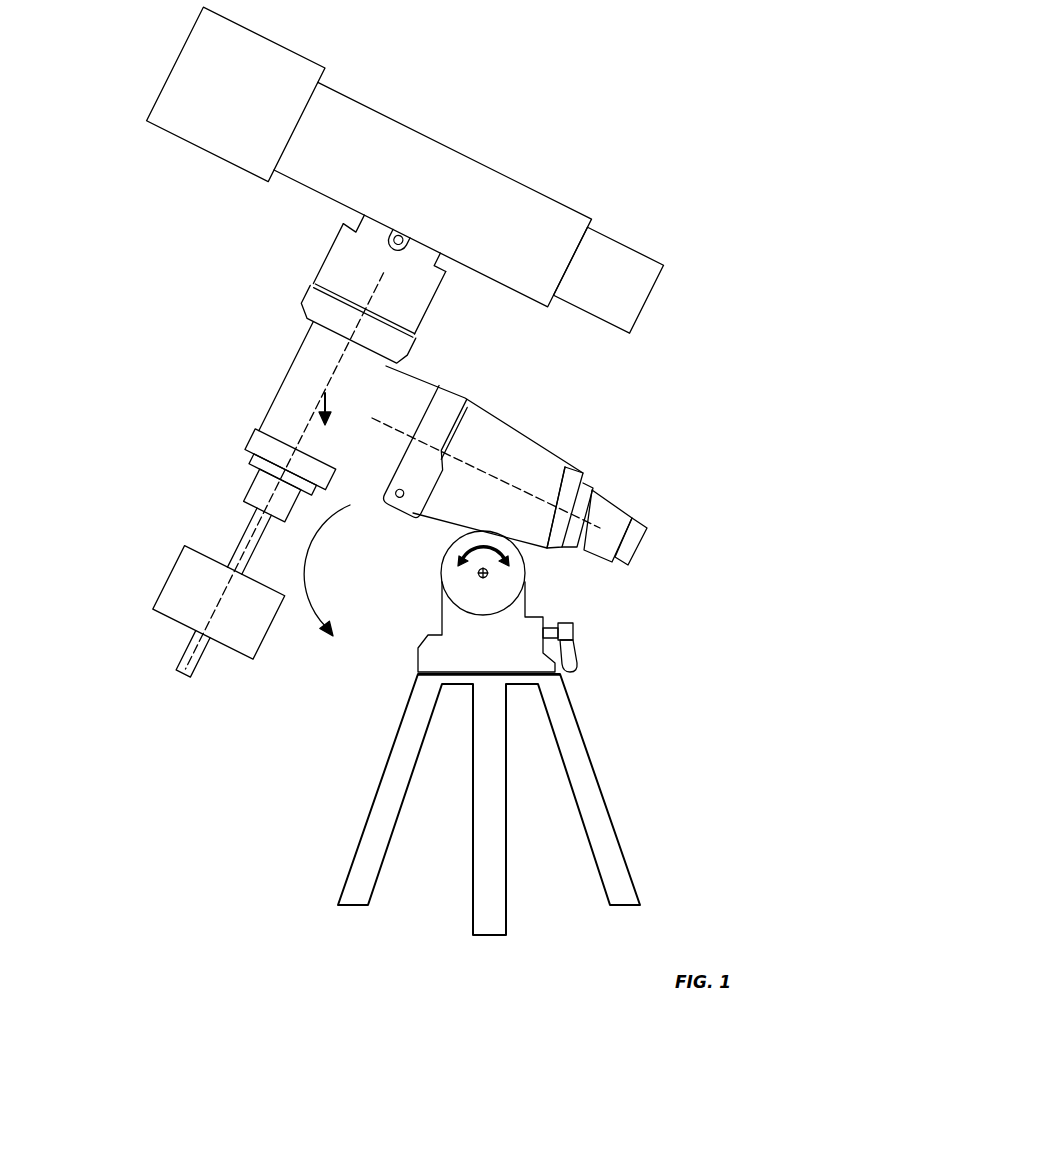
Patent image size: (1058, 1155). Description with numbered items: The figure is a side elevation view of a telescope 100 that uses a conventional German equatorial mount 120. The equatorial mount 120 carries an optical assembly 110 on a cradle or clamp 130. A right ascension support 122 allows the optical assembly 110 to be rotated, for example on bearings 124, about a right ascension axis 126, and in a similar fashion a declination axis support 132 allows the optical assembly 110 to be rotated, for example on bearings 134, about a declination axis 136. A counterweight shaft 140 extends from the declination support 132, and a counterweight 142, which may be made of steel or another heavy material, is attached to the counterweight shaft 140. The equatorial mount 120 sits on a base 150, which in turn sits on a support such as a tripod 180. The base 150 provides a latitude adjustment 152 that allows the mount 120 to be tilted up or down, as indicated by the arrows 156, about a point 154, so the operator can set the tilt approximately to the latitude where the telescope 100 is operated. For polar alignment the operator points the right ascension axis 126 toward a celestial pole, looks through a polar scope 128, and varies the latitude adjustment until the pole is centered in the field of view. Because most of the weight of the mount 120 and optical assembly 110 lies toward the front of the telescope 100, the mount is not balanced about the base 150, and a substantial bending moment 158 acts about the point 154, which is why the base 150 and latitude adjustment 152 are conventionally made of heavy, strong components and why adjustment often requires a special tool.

The telescope 100 is at (689, 52).
The optical assembly 110 is at (493, 198).
The equatorial mount 120 is at (124, 254).
The right ascension support 122 is at (498, 458).
The bearings 124 is at (443, 375).
The right ascension axis 126 is at (517, 483).
The polar scope 128 is at (612, 523).
The cradle or clamp 130 is at (350, 230).
The declination axis support 132 is at (315, 362).
The bearings 134 is at (310, 282).
The declination axis 136 is at (315, 413).
The counterweight shaft 140 is at (248, 530).
The counterweight 142 is at (175, 590).
The base 150 is at (477, 603).
The latitude adjustment 152 is at (457, 583).
The point 154 is at (478, 571).
The arrows 156 is at (490, 577).
The bending moment 158 is at (310, 613).
The tripod 180 is at (402, 755).